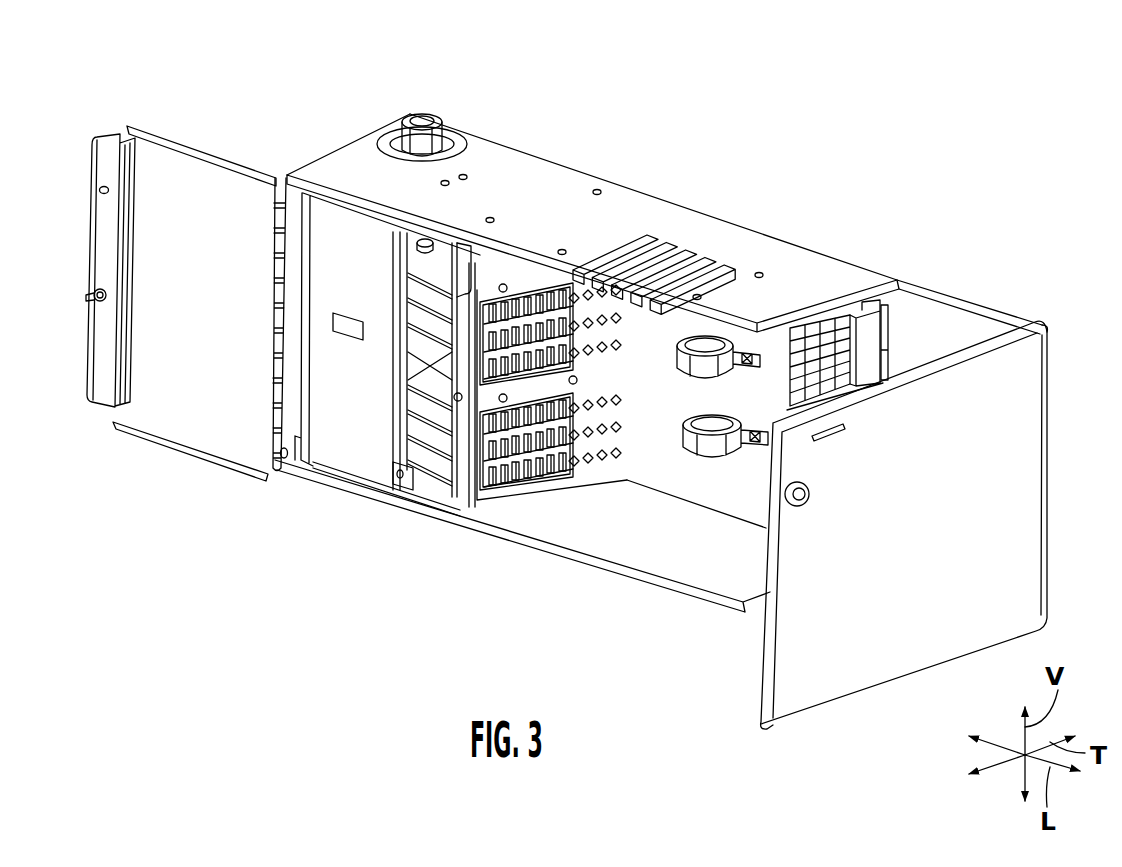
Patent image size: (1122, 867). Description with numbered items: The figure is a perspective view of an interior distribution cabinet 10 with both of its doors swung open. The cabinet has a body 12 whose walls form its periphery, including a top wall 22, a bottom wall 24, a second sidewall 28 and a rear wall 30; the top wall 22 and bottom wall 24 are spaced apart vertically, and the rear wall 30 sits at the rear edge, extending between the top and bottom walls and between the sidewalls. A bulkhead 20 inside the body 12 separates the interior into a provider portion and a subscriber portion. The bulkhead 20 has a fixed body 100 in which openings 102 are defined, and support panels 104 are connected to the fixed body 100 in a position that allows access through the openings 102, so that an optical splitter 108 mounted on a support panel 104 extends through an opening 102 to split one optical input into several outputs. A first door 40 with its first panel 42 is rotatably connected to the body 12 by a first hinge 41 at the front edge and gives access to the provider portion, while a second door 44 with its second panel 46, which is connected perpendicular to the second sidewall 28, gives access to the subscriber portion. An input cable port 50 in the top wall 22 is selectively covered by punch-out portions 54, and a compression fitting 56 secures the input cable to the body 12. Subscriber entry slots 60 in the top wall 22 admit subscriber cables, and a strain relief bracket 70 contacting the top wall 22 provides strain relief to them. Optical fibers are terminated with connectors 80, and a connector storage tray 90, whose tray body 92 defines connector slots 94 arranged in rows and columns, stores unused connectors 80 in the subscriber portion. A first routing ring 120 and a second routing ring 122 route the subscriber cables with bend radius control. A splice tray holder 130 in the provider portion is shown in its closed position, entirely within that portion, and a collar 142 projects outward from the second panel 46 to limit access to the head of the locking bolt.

The interior distribution cabinet 10 is at (312, 86).
The body 12 is at (350, 134).
The bulkhead 20 is at (460, 500).
The top wall 22 is at (568, 188).
The bottom wall 24 is at (630, 547).
The second sidewall 28 is at (922, 310).
The rear wall 30 is at (742, 487).
The first door 40 is at (152, 246).
The first hinge 41 is at (282, 180).
The first panel 42 is at (140, 217).
The second door 44 is at (996, 287).
The second panel 46 is at (1015, 440).
The input cable port 50 is at (396, 116).
The punch-out portions 54 is at (472, 140).
The compression fitting 56 is at (452, 131).
The subscriber entry slots 60 is at (627, 238).
The strain relief bracket 70 is at (641, 322).
The connectors 80 is at (593, 490).
The connector storage tray 90 is at (874, 321).
The tray body 92 is at (893, 357).
The connector slots 94 is at (836, 325).
The fixed body 100 is at (488, 507).
The openings 102 is at (477, 503).
The support panels 104 is at (437, 268).
The optical splitter 108 is at (432, 458).
The first routing ring 120 is at (711, 330).
The second routing ring 122 is at (728, 406).
The splice tray holder 130 is at (368, 463).
The collar 142 is at (813, 481).